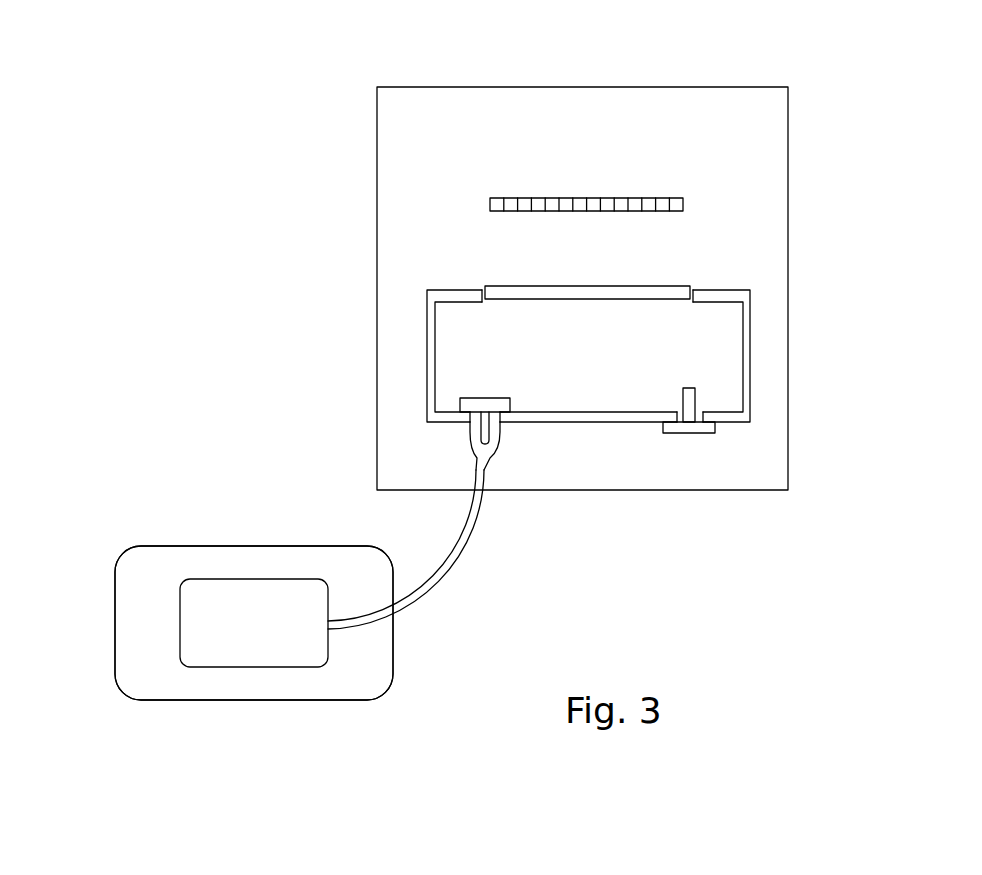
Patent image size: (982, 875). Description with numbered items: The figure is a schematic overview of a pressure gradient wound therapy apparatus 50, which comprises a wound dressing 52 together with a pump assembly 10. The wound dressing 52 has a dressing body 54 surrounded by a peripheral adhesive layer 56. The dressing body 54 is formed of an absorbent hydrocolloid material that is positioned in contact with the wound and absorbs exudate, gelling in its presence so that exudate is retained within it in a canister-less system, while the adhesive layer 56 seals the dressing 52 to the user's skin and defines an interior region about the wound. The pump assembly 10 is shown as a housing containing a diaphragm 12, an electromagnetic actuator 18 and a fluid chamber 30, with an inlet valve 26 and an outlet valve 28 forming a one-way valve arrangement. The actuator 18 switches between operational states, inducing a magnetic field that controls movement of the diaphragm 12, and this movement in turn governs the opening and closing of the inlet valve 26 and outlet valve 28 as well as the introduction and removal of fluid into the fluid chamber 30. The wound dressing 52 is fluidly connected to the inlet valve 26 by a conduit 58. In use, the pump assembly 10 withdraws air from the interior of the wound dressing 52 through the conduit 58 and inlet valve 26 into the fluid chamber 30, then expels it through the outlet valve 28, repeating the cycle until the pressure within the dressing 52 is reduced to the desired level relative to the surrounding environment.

The pump assembly 10 is at (788, 155).
The diaphragm 12 is at (480, 285).
The electromagnetic actuator 18 is at (683, 198).
The inlet valve 26 is at (513, 407).
The outlet valve 28 is at (698, 433).
The fluid chamber 30 is at (750, 365).
The pressure gradient wound therapy apparatus 50 is at (155, 357).
The wound dressing 52 is at (158, 703).
The dressing body 54 is at (208, 590).
The peripheral adhesive layer 56 is at (130, 603).
The conduit 58 is at (428, 587).